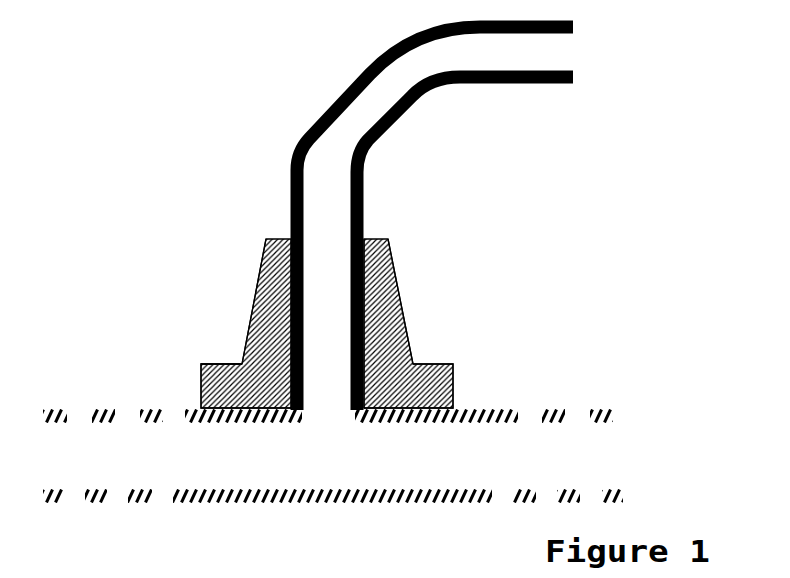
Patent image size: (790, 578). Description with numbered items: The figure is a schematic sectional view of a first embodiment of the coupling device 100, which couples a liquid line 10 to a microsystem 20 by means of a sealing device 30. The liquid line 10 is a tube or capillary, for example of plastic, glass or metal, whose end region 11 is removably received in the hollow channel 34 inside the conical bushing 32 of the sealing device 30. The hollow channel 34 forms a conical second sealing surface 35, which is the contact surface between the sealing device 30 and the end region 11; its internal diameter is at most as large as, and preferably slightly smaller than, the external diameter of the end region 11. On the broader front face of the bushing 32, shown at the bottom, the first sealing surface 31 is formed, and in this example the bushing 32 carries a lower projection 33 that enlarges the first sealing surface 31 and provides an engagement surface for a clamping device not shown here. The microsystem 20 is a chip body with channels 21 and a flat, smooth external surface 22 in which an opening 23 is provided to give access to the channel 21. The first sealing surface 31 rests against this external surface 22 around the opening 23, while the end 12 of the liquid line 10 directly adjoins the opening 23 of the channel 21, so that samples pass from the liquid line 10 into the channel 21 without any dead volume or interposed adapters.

The liquid line 10 is at (406, 218).
The end region of the liquid line 11 is at (302, 281).
The end of the liquid line 12 is at (302, 413).
The microsystem 20 is at (333, 426).
The channel 21 is at (483, 465).
The external surface 22 is at (510, 408).
The opening 23 is at (342, 418).
The sealing device 30 is at (463, 282).
The first sealing surface 31 is at (232, 407).
The conical bushing 32 is at (393, 327).
The lower projection 33 is at (212, 365).
The hollow channel 34 is at (452, 276).
The second sealing surface 35 is at (291, 300).
The coupling device 100 is at (207, 261).